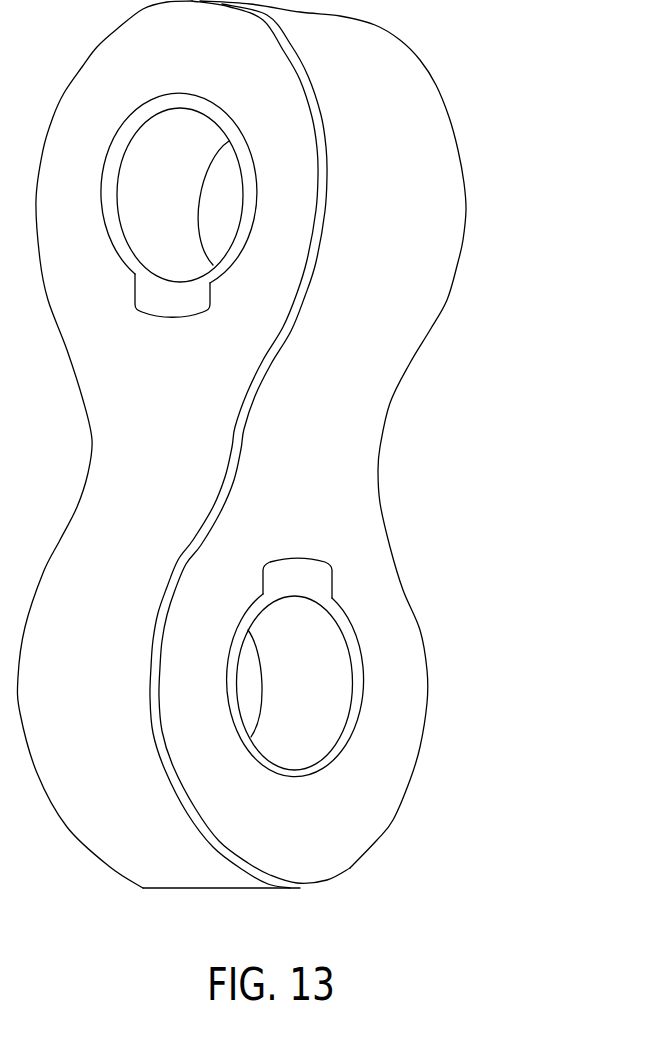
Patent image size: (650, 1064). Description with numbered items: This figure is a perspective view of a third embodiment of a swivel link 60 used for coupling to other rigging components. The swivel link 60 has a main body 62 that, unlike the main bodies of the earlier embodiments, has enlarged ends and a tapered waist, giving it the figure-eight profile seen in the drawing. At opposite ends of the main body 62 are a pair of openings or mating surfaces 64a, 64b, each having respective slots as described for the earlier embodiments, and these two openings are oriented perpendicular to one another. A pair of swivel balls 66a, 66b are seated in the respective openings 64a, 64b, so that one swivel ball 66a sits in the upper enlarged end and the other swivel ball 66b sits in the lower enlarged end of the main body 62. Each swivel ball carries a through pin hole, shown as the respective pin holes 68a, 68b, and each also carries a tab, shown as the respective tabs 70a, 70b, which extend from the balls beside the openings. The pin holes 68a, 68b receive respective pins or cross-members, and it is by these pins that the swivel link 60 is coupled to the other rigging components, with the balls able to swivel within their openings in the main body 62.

The swivel link 60 is at (450, 431).
The main body 62 is at (460, 265).
The opening or mating surface 64a is at (107, 245).
The opening or mating surface 64b is at (363, 683).
The swivel ball 66a is at (142, 118).
The swivel ball 66b is at (323, 768).
The pin hole 68a is at (130, 185).
The pin hole 68b is at (328, 641).
The tab 70a is at (174, 308).
The tab 70b is at (302, 568).